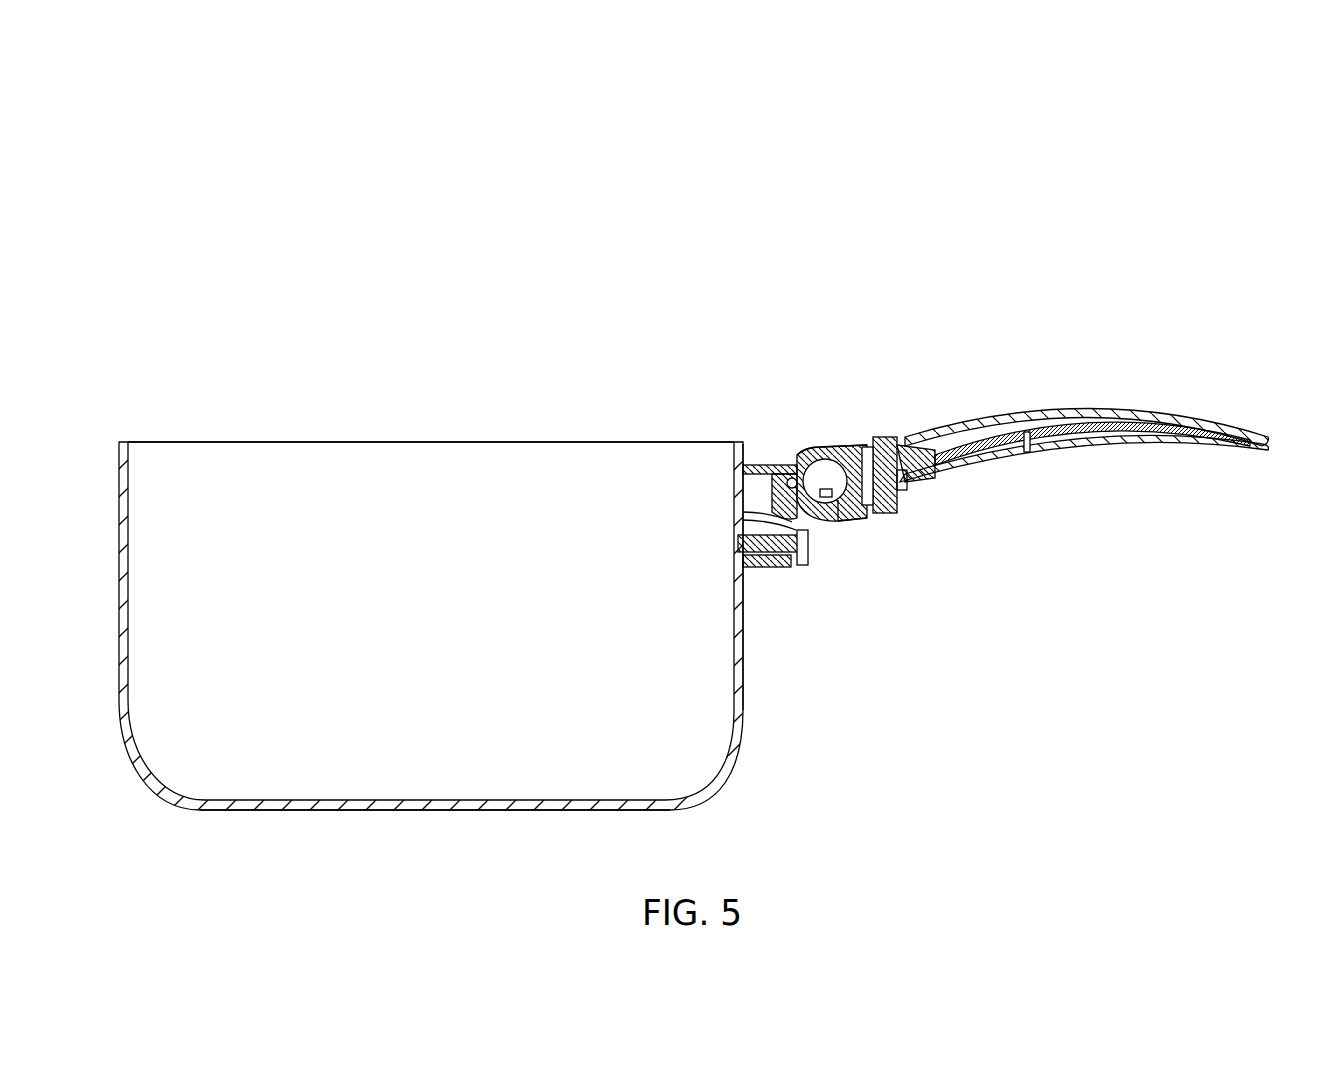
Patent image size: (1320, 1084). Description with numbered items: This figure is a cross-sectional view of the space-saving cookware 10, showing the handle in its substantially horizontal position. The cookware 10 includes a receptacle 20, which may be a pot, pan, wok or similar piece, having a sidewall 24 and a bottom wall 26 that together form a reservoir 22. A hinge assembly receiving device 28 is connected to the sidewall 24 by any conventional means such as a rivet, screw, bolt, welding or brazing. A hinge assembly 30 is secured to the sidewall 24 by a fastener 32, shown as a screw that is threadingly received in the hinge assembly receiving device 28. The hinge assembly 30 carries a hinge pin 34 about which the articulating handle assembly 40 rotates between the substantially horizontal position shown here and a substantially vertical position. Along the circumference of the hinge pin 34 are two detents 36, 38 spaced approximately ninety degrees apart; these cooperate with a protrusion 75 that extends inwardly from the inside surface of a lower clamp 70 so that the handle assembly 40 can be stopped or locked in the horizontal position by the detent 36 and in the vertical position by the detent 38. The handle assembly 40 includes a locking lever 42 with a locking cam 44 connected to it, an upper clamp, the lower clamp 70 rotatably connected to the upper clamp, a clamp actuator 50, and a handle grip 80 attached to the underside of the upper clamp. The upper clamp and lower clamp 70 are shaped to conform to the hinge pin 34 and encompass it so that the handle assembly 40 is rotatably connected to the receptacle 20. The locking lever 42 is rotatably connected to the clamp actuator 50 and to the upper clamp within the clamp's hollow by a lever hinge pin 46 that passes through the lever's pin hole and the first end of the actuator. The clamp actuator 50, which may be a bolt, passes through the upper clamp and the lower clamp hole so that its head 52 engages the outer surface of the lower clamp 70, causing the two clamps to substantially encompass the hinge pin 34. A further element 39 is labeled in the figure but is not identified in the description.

The space-saving cookware 10 is at (768, 175).
The receptacle 20 is at (507, 370).
The reservoir 22 is at (362, 455).
The sidewall 24 is at (745, 672).
The bottom wall 26 is at (413, 812).
The hinge assembly receiving device 28 is at (777, 501).
The hinge assembly 30 is at (765, 572).
The fastener 32 is at (810, 552).
The hinge pin 34 is at (823, 458).
The detent 36 is at (799, 464).
The detent 38 is at (870, 450).
The pivot screw 39 is at (786, 470).
The articulating handle assembly 40 is at (1022, 315).
The locking lever 42 is at (1037, 410).
The locking cam 44 is at (884, 445).
The lever hinge pin 46 is at (905, 445).
The clamp actuator 50 is at (920, 486).
The head 52 is at (866, 521).
The lower clamp 70 is at (838, 525).
The protrusion 75 is at (828, 505).
The handle grip 80 is at (1115, 450).